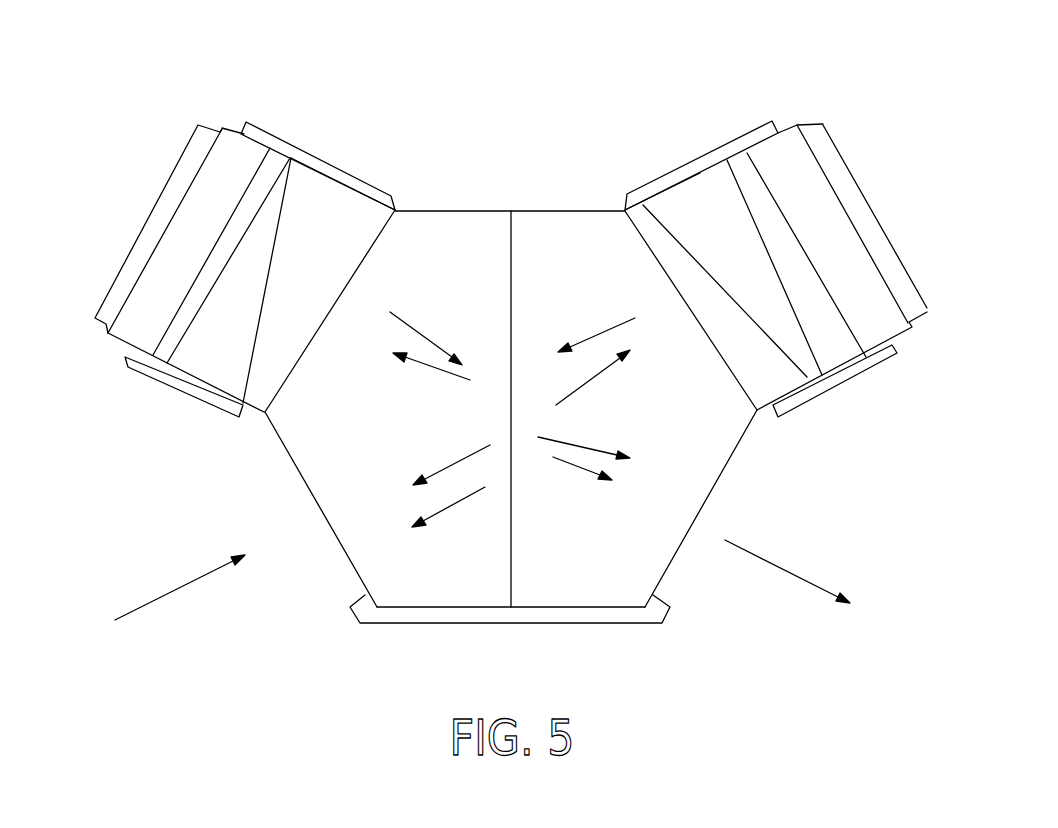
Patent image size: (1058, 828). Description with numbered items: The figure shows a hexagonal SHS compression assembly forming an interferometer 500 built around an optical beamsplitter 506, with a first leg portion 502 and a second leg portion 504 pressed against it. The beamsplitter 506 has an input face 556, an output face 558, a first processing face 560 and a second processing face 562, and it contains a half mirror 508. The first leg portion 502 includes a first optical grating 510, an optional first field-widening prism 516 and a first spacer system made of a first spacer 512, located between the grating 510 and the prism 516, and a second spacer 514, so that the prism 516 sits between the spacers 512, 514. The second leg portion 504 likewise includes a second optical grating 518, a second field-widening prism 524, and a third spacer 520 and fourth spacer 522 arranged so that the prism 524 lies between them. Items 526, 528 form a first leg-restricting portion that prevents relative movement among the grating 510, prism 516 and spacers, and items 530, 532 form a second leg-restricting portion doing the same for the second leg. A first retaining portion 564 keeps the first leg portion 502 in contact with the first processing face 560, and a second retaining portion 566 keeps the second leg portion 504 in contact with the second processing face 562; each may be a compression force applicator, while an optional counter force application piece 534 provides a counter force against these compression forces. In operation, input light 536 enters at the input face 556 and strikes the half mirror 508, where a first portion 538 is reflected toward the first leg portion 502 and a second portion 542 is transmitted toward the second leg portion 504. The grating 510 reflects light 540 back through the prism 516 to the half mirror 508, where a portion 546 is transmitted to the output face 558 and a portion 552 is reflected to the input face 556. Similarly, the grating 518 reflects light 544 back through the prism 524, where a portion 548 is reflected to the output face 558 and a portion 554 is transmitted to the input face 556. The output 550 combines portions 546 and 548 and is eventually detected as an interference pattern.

The interferometer 500 is at (158, 83).
The first leg portion 502 is at (97, 360).
The second leg portion 504 is at (921, 360).
The optical beamsplitter 506 is at (455, 238).
The half mirror 508 is at (512, 258).
The first optical grating 510 is at (180, 262).
The first spacer 512 is at (262, 193).
The second spacer 514 is at (360, 218).
The first field-widening prism 516 is at (208, 363).
The second optical grating 518 is at (857, 267).
The third spacer 520 is at (778, 228).
The fourth spacer 522 is at (640, 215).
The second field-widening prism 524 is at (805, 150).
The item of first leg-restricting portion 526 is at (221, 398).
The item of first leg-restricting portion 528 is at (338, 178).
The item of second leg-restricting portion 530 is at (717, 157).
The item of second leg-restricting portion 532 is at (807, 393).
The counter force application piece 534 is at (355, 625).
The input light 536 is at (185, 592).
The first portion of input light 538 is at (435, 378).
The light reflected by first grating 540 is at (427, 318).
The second portion of input light 542 is at (590, 380).
The light reflected by second grating 544 is at (592, 318).
The light portion transmitted to output face 546 is at (522, 487).
The light portion reflected to output face 548 is at (597, 437).
The output light 550 is at (780, 592).
The light portion reflected to input face 552 is at (447, 463).
The light portion transmitted to input face 554 is at (465, 500).
The input face 556 is at (355, 573).
The output face 558 is at (712, 503).
The first processing face 560 is at (298, 362).
The second processing face 562 is at (675, 290).
The first retaining portion 564 is at (118, 283).
The second retaining portion 566 is at (842, 177).